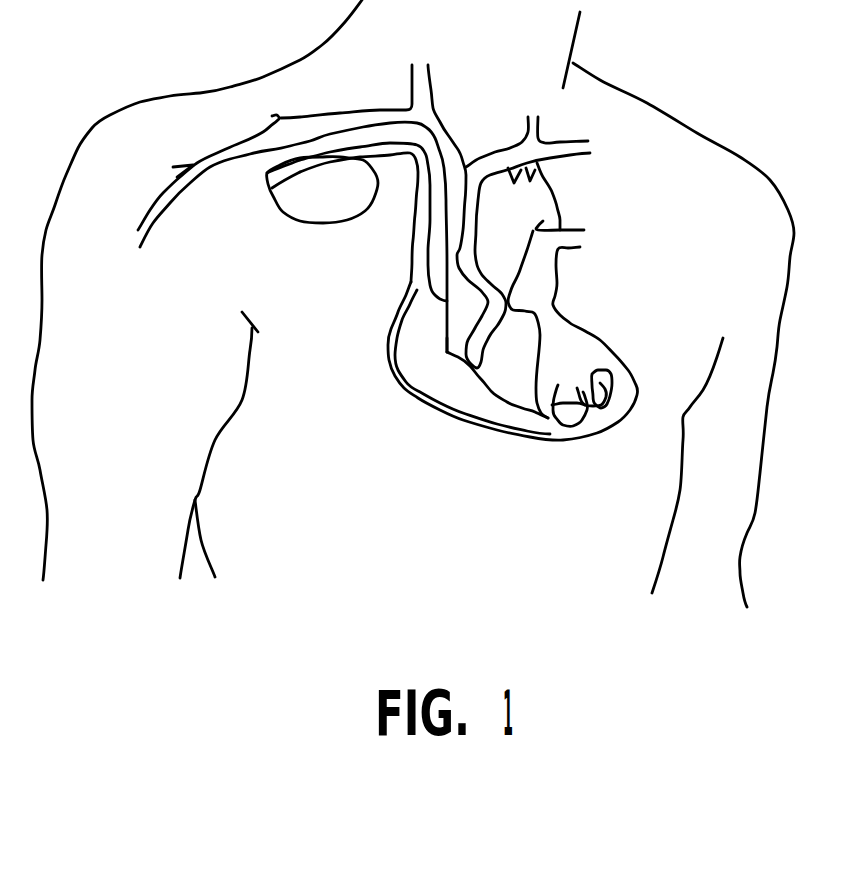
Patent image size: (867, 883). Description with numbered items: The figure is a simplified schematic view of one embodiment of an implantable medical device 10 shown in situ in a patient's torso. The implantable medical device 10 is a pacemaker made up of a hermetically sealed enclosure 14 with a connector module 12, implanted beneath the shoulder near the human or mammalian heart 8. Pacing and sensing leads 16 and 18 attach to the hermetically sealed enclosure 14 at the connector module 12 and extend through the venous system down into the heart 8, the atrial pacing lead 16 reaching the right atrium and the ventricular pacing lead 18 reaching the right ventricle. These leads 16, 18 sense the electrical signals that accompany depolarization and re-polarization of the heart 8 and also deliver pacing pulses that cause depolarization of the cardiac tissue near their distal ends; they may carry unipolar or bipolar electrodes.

The heart 8 is at (523, 440).
The implantable medical device 10 is at (246, 255).
The connector module 12 is at (278, 173).
The hermetically sealed enclosure 14 is at (341, 200).
The atrial pacing lead 16 is at (423, 253).
The ventricular pacing lead 18 is at (440, 352).